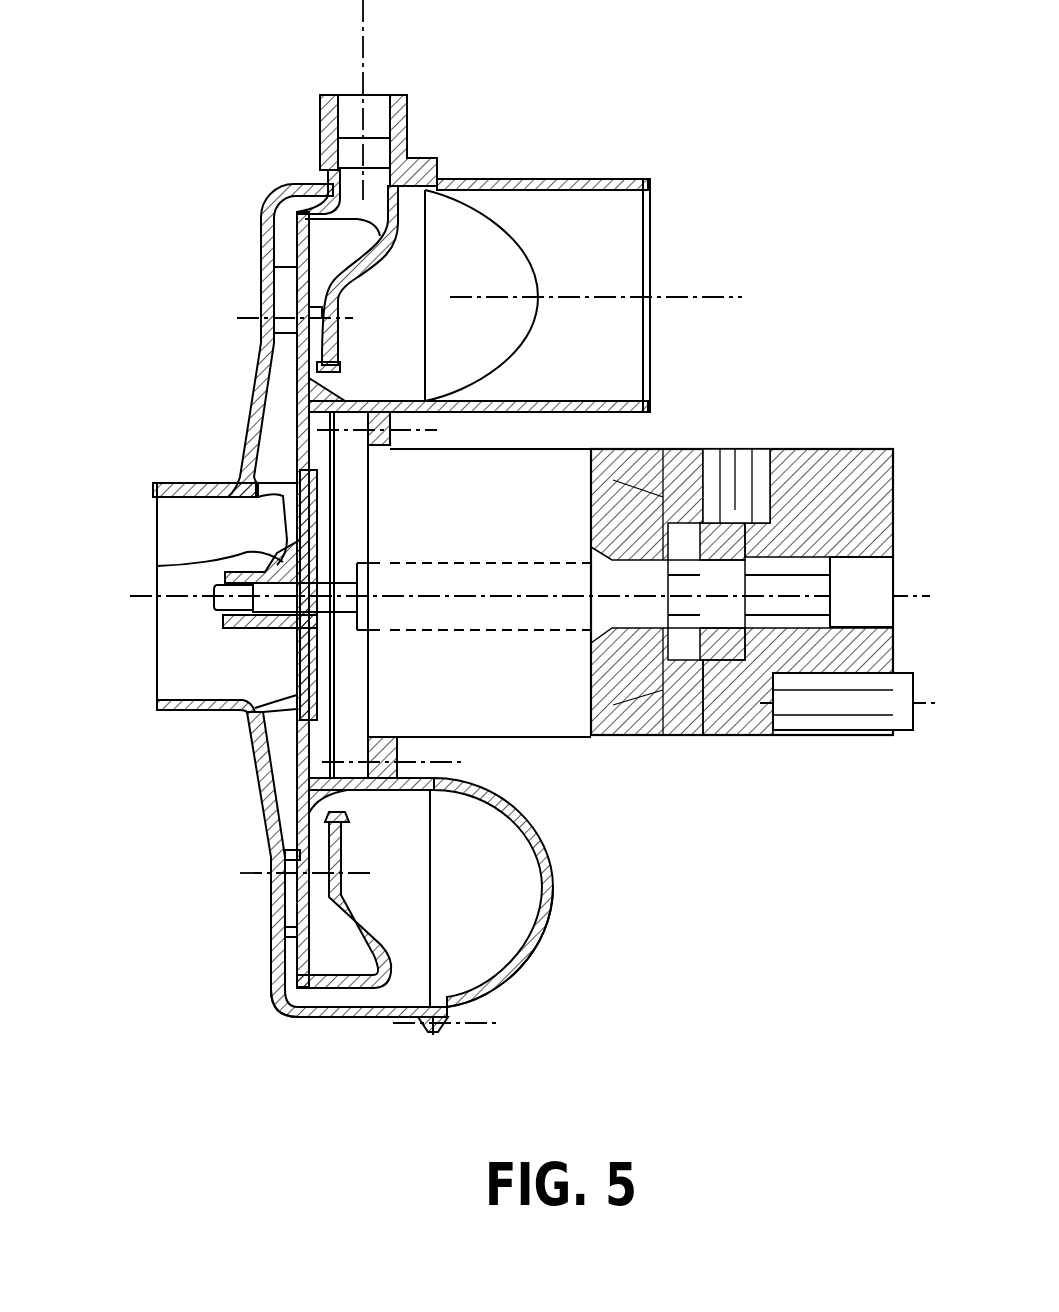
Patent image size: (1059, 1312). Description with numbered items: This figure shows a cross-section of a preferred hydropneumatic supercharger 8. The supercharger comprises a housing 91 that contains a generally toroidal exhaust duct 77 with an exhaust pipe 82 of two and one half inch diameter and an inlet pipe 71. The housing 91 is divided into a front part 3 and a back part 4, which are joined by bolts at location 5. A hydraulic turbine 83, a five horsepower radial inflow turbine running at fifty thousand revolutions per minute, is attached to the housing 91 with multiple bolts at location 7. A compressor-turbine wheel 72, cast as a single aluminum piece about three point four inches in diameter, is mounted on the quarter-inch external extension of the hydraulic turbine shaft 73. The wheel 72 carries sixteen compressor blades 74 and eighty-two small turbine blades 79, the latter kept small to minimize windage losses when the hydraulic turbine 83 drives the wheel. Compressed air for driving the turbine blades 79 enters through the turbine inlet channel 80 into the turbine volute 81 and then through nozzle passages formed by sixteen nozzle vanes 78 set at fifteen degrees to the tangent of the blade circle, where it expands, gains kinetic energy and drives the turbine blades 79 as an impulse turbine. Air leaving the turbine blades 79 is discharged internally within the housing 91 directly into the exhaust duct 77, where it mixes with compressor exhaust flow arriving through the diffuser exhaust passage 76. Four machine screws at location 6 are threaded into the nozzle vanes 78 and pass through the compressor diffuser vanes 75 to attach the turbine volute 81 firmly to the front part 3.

The front part 3 is at (293, 1012).
The back part 4 is at (502, 995).
The bolt location 5 is at (413, 1030).
The machine screw location 6 is at (243, 313).
The bolt location 7 is at (403, 752).
The hydropneumatic supercharger 8 is at (524, 129).
The inlet pipe 71 is at (183, 522).
The compressor-turbine wheel 72 is at (165, 562).
The hydraulic turbine shaft 73 is at (287, 605).
The compressor blades 74 is at (287, 777).
The compressor diffuser vanes 75 is at (293, 912).
The diffuser exhaust passage 76 is at (290, 985).
The exhaust duct 77 is at (463, 933).
The nozzle vanes 78 is at (337, 887).
The turbine blades 79 is at (343, 843).
The turbine inlet channel 80 is at (373, 107).
The turbine volute 81 is at (340, 248).
The exhaust pipe 82 is at (602, 248).
The hydraulic turbine 83 is at (677, 449).
The housing 91 is at (530, 813).